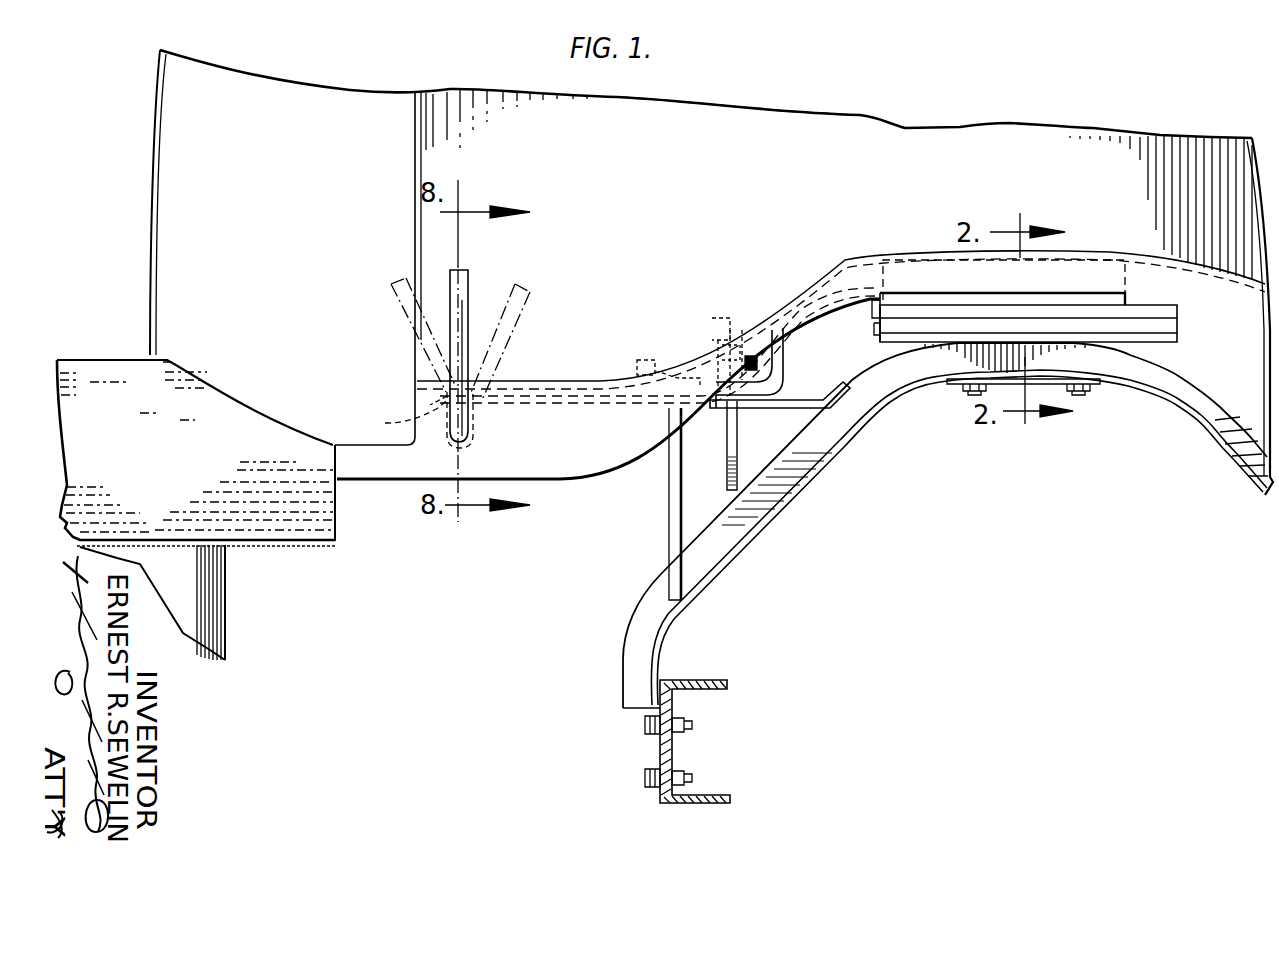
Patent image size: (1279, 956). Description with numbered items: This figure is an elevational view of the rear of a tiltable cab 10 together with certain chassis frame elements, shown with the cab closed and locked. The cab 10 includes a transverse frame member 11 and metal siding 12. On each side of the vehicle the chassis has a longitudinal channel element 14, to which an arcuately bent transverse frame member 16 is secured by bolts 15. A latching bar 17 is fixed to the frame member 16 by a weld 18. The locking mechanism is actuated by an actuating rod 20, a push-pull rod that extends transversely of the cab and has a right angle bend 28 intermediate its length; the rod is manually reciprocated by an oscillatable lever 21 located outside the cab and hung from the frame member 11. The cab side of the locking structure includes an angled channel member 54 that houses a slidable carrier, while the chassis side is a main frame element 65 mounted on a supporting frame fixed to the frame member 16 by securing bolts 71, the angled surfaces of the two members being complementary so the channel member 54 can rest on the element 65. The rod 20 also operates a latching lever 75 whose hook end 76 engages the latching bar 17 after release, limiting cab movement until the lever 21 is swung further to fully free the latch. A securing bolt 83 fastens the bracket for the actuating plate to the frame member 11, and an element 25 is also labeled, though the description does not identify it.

The tiltable cab 10 is at (900, 148).
The transverse frame member 11 is at (844, 254).
The metal siding 12 is at (712, 130).
The longitudinal channel element 14 is at (702, 682).
The bolts 15 is at (690, 725).
The arcuately bent transverse frame member 16 is at (1152, 390).
The latching bar 17 is at (813, 420).
The weld 18 is at (850, 404).
The actuating rod 20 is at (781, 303).
The oscillatable lever 21 is at (470, 300).
The clamp 25 is at (386, 424).
The right angle bend 28 is at (786, 368).
The channel member 54 is at (1082, 268).
The main frame element 65 is at (930, 330).
The securing bolts 71 is at (962, 396).
The latching lever 75 is at (722, 438).
The hook end 76 is at (727, 475).
The securing bolt 83 is at (639, 362).